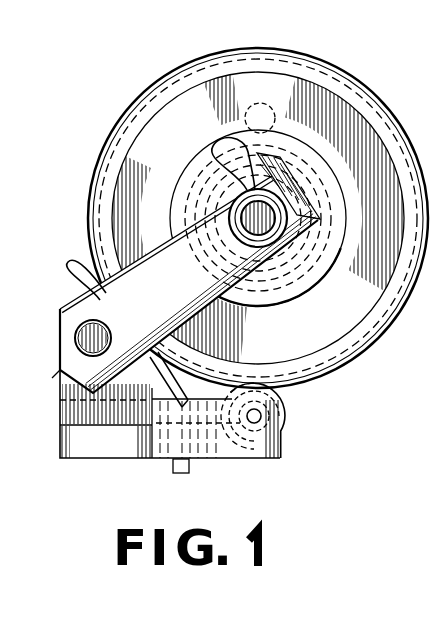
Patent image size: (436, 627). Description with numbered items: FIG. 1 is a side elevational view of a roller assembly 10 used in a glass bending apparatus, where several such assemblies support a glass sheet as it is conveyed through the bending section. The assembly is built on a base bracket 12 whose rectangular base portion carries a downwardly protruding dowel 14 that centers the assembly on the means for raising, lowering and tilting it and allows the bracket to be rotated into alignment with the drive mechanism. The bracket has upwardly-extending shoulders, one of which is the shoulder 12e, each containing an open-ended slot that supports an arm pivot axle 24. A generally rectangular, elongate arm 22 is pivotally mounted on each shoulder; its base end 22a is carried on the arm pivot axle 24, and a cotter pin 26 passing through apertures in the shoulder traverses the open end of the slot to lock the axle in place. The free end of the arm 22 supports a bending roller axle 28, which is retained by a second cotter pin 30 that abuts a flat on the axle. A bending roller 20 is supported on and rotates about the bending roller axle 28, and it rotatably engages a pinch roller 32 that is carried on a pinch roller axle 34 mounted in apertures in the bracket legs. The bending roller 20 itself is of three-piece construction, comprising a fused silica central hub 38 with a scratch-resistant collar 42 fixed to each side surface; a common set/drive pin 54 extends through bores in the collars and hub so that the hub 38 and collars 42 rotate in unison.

The roller assembly 10 is at (93, 66).
The base bracket 12 is at (100, 461).
The upwardly-extending shoulder 12e is at (66, 374).
The dowel 14 is at (178, 474).
The bending roller 20 is at (315, 333).
The arm 22 is at (158, 265).
The base end of the arm 22a is at (74, 318).
The arm pivot axle 24 is at (97, 357).
The cotter pin 26 is at (155, 219).
The bending roller axle 28 is at (297, 210).
The second cotter pin 30 is at (237, 85).
The pinch roller 32 is at (285, 420).
The pinch roller axle 34 is at (252, 424).
The central hub 38 is at (318, 57).
The scratch-resistant collar 42 is at (358, 78).
The set/drive pin 54 is at (262, 103).